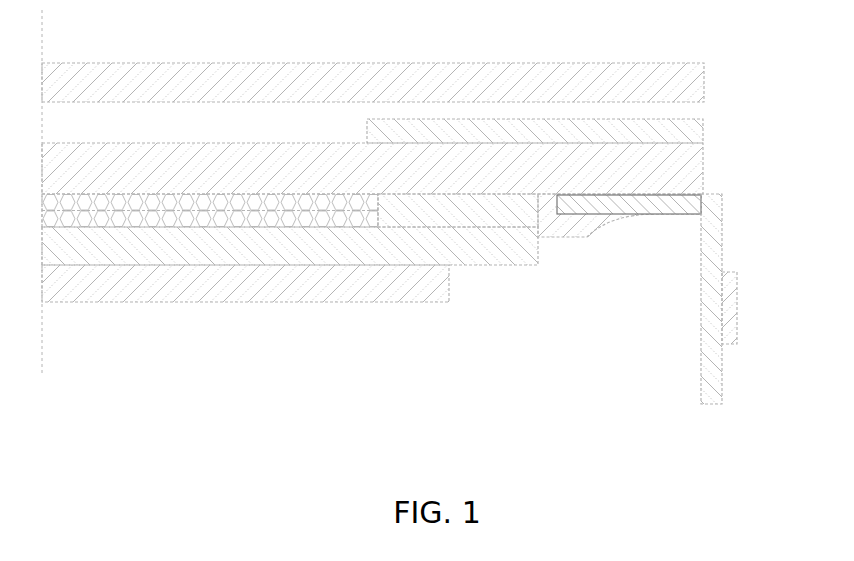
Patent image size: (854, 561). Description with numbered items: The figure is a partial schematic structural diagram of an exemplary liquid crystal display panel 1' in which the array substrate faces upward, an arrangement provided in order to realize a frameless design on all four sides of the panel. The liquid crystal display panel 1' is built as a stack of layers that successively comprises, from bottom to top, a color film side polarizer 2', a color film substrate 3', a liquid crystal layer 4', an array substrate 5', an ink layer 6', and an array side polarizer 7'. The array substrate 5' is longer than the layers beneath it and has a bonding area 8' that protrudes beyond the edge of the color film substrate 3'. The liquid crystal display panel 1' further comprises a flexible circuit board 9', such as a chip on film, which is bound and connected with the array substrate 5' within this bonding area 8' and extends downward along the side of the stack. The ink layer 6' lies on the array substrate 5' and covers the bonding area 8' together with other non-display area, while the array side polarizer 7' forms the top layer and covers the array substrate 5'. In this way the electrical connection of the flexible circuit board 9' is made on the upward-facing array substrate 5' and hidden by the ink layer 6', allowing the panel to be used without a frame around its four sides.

The liquid crystal display panel 1' is at (69, 226).
The color film side polarizer 2' is at (245, 354).
The color film substrate 3' is at (290, 318).
The liquid crystal layer 4' is at (210, 318).
The array substrate 5' is at (372, 293).
The ink layer 6' is at (535, 281).
The array side polarizer 7' is at (373, 253).
The bonding area 8' is at (620, 272).
The flexible circuit board 9' is at (672, 317).